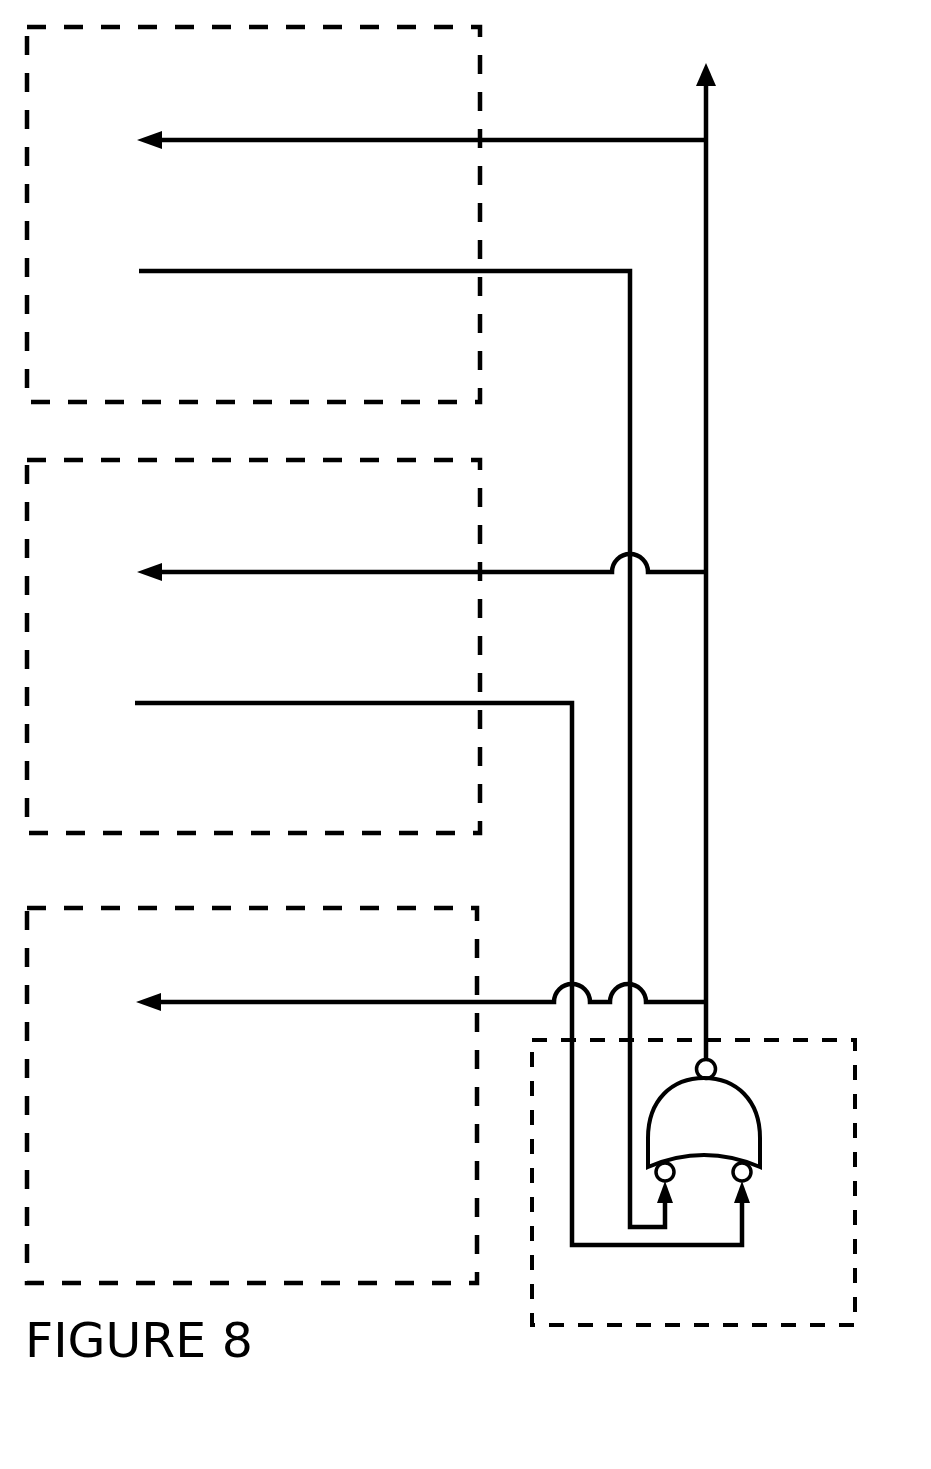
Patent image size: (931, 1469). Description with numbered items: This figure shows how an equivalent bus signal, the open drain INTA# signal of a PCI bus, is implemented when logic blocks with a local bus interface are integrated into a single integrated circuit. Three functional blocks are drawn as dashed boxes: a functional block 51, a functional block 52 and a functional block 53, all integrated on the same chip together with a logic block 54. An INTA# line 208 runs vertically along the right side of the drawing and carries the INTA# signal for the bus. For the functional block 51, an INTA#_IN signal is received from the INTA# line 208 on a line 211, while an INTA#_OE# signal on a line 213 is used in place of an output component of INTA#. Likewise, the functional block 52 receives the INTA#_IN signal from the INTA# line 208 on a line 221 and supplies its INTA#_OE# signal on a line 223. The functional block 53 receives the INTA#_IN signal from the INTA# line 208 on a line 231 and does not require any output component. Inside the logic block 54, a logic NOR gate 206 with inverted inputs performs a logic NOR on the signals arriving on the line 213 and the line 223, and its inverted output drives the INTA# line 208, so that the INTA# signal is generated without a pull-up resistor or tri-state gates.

The functional block 51 is at (349, 403).
The functional block 52 is at (347, 834).
The functional block 53 is at (345, 1284).
The logic block 54 is at (775, 1326).
The logic NOR gate 206 is at (764, 1148).
The INTA# line 208 is at (708, 363).
The line 211 is at (196, 143).
The line 213 is at (196, 274).
The line 221 is at (196, 575).
The line 223 is at (176, 706).
The line 231 is at (195, 1005).